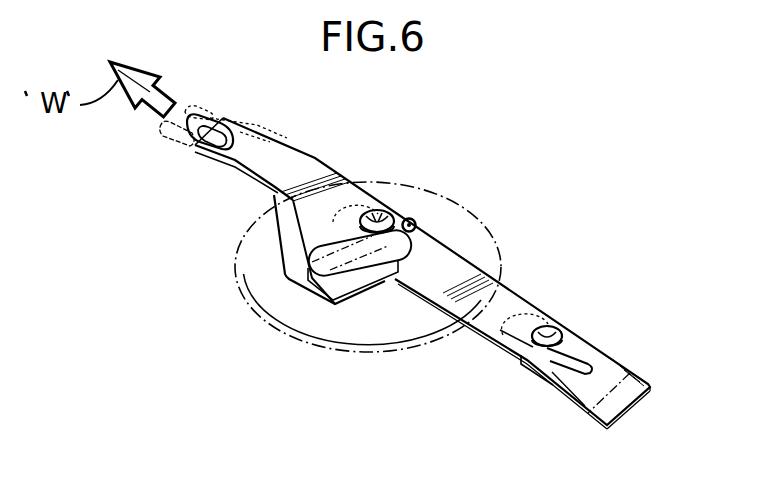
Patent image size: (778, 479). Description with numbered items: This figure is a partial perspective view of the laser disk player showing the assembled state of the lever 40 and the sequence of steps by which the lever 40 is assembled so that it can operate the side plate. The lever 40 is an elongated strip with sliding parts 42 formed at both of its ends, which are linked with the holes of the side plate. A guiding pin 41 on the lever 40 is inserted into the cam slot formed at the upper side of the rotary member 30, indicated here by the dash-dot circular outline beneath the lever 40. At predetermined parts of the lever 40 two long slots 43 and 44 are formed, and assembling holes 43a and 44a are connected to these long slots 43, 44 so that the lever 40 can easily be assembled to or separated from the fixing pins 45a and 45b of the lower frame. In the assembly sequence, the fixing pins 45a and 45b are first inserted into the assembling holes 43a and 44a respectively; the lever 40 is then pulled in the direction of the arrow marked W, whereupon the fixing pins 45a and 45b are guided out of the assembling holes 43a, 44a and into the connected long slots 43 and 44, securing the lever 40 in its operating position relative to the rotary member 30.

The rotary member 30 is at (513, 252).
The lever 40 is at (460, 248).
The guiding pin 41 is at (412, 221).
The sliding parts 42 is at (193, 152).
The long slot 43 is at (372, 273).
The assembling hole 43a is at (286, 281).
The long slot 44 is at (555, 390).
The assembling hole 44a is at (520, 362).
The fixing pin 45a is at (387, 211).
The fixing pin 45b is at (553, 327).